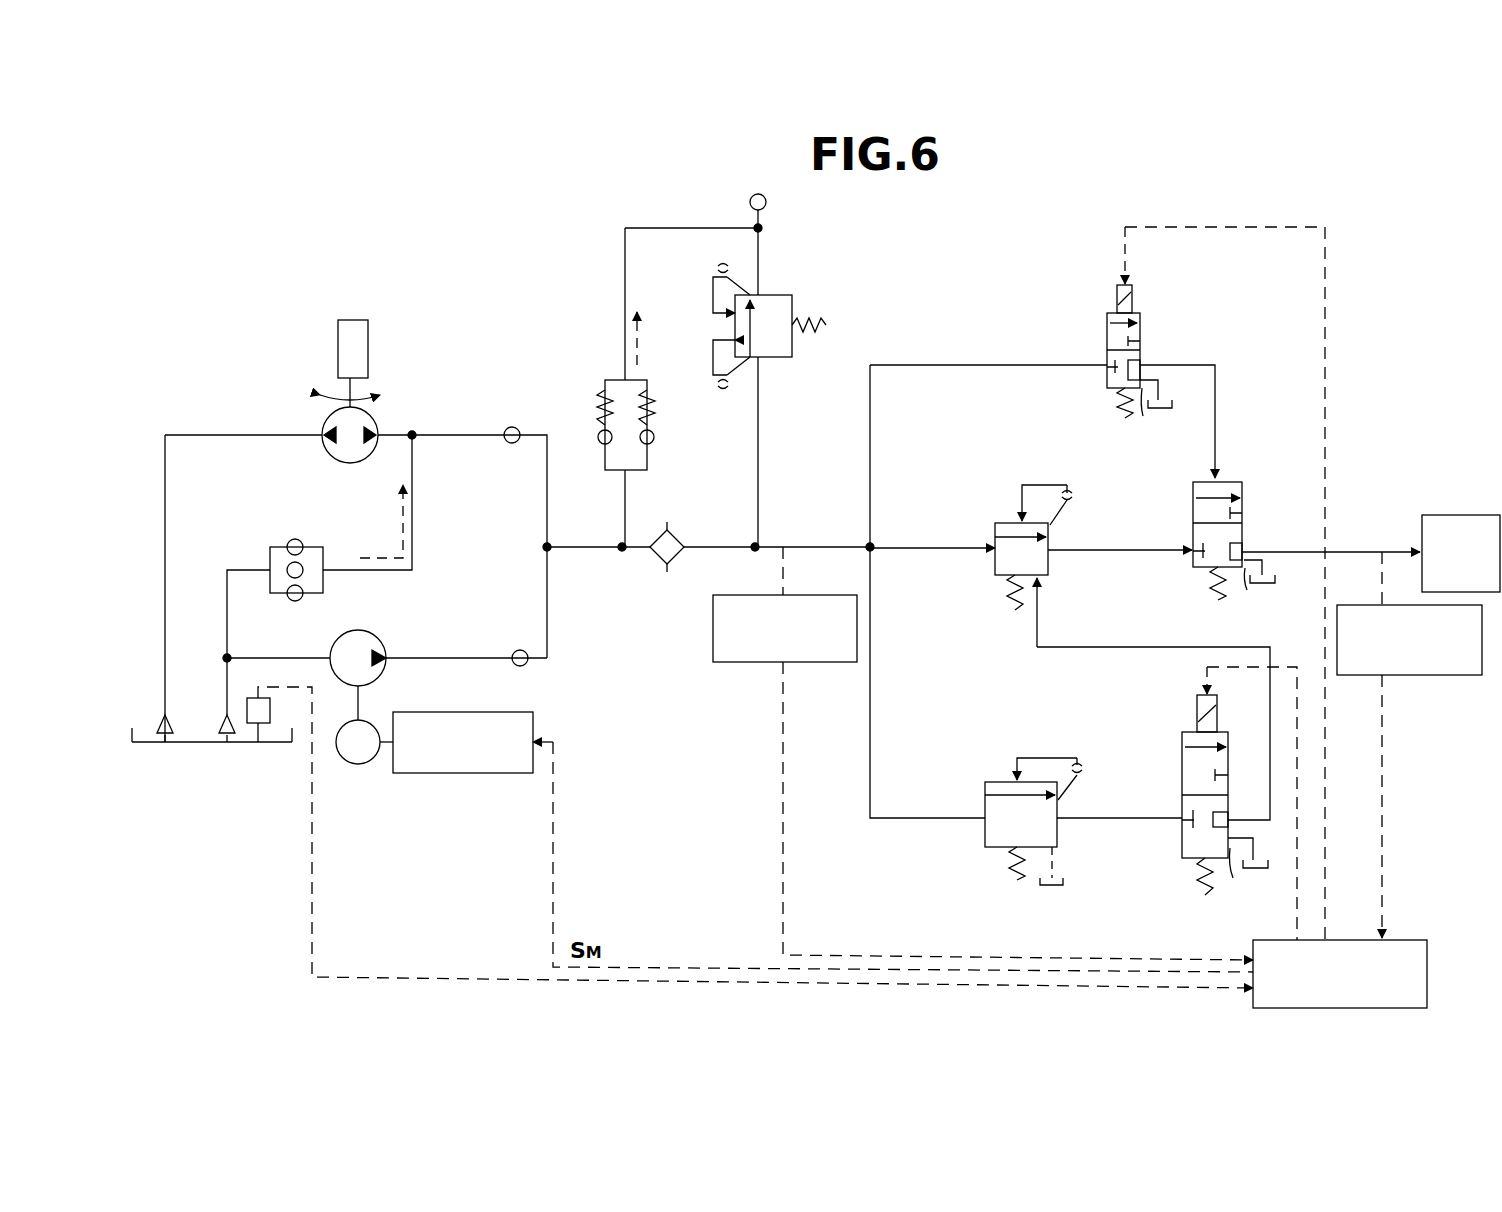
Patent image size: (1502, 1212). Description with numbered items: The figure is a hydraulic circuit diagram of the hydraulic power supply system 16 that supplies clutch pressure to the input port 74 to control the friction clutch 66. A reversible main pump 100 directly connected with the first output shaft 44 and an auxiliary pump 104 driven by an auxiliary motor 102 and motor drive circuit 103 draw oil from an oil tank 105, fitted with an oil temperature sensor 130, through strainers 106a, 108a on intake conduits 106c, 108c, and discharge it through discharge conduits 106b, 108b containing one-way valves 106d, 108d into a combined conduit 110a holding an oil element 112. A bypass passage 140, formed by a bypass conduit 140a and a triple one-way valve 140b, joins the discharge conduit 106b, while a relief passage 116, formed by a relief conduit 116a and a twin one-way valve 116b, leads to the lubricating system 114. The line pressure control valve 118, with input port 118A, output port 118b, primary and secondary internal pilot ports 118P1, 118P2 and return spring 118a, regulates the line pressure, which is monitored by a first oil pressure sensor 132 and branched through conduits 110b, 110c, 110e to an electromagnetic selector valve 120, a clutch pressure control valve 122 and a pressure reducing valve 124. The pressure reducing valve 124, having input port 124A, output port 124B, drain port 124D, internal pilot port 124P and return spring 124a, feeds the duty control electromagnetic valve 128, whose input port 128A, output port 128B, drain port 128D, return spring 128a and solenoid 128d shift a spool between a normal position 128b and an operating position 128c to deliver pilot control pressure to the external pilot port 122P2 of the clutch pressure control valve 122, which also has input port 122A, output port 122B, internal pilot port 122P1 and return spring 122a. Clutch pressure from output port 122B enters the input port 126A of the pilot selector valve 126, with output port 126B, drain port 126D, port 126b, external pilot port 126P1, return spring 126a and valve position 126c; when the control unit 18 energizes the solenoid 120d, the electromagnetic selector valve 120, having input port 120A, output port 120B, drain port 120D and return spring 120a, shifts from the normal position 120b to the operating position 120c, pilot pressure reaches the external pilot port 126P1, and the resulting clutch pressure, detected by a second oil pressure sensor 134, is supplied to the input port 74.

The hydraulic power supply system 16 is at (517, 252).
The control unit 18 is at (1398, 940).
The first output shaft 44 is at (338, 345).
The friction clutch 66 is at (1478, 585).
The input port 74 is at (1371, 553).
The main pump 100 is at (372, 420).
The auxiliary motor 102 is at (360, 765).
The motor drive circuit 103 is at (462, 775).
The auxiliary pump 104 is at (380, 642).
The oil tank 105 is at (240, 745).
The strainer 106a is at (168, 745).
The discharge conduit 106b is at (453, 433).
The intake conduit 106c is at (165, 445).
The one-way valve 106d is at (518, 430).
The strainer 108a is at (228, 745).
The discharge conduit 108b is at (418, 660).
The intake conduit 108c is at (272, 657).
The one-way valve 108d is at (527, 666).
The combined conduit 110a is at (600, 549).
The conduit 110b is at (960, 363).
The conduit 110c is at (870, 545).
The conduit 110e is at (890, 815).
The oil element 112 is at (672, 568).
The lubricating system 114 is at (766, 207).
The relief passage 116 is at (600, 372).
The relief conduit 116a is at (625, 302).
The twin one-way valve 116b is at (655, 440).
The line pressure control valve 118 is at (826, 312).
The return spring 118a is at (830, 328).
The output port 118b is at (742, 312).
The input port 118A is at (762, 358).
The primary internal pilot port 118P1 is at (722, 345).
The secondary internal pilot port 118P2 is at (718, 312).
The electromagnetic selector valve 120 is at (1097, 272).
The return spring 120a is at (1115, 404).
The normal position 120b is at (1107, 380).
The operating position 120c is at (1107, 332).
The solenoid 120d is at (1131, 302).
The input port 120A is at (1107, 366).
The output port 120B is at (1142, 357).
The drain port 120D is at (1154, 415).
The clutch pressure control valve 122 is at (990, 472).
The return spring 122a is at (1008, 598).
The input port 122A is at (992, 542).
The output port 122B is at (1052, 540).
The internal pilot port 122P1 is at (1028, 484).
The external pilot port 122P2 is at (1042, 580).
The pressure reducing valve 124 is at (985, 776).
The return spring 124a is at (1010, 864).
The input port 124A is at (985, 816).
The output port 124B is at (1058, 822).
The drain port 124D is at (1060, 858).
The internal pilot port 124P is at (1014, 776).
The pilot selector valve 126 is at (1232, 483).
The return spring 126a is at (1218, 602).
The port 126b is at (1193, 565).
The valve position 126c is at (1195, 493).
The input port 126A is at (1193, 548).
The output port 126B is at (1245, 552).
The drain port 126D is at (1272, 592).
The external pilot port 126P1 is at (1213, 478).
The duty control electromagnetic valve 128 is at (1170, 740).
The return spring 128a is at (1205, 898).
The normal position 128b is at (1182, 845).
The operating position 128c is at (1182, 764).
The solenoid 128d is at (1200, 716).
The input port 128A is at (1182, 816).
The output port 128B is at (1230, 818).
The drain port 128D is at (1255, 872).
The oil temperature sensor 130 is at (270, 712).
The first oil pressure sensor 132 is at (755, 663).
The second oil pressure sensor 134 is at (1420, 677).
The bypass passage 140 is at (252, 550).
The bypass conduit 140a is at (410, 520).
The triple one-way valve 140b is at (300, 545).